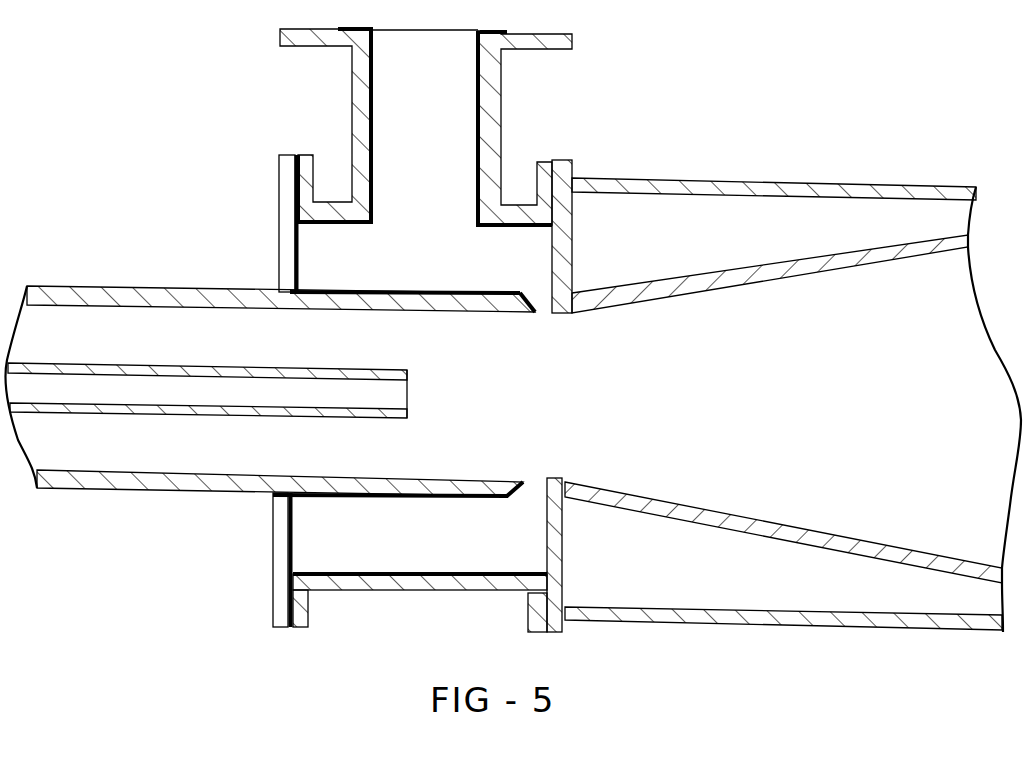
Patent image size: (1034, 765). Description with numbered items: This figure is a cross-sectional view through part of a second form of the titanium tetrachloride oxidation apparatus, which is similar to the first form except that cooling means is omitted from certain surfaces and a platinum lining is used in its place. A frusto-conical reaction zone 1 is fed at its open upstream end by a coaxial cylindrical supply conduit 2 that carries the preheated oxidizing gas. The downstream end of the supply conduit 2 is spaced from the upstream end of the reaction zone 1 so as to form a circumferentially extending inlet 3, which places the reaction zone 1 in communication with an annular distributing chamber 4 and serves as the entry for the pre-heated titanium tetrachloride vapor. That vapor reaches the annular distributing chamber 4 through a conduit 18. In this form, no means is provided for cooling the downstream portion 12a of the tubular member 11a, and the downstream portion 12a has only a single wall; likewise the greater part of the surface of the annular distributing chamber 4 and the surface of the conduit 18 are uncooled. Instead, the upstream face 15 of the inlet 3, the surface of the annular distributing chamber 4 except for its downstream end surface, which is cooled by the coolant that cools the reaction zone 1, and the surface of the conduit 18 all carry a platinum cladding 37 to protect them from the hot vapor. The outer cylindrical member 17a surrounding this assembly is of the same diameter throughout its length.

The reaction zone 1 is at (851, 334).
The supply conduit 2 is at (464, 408).
The inlet 3 is at (543, 312).
The annular distributing chamber 4 is at (432, 253).
The tubular member 11a is at (383, 314).
The downstream portion 12a is at (421, 476).
The upstream face 15 is at (528, 291).
The cylindrical member 17a is at (410, 562).
The conduit 18 is at (371, 108).
The platinum cladding 37 is at (298, 266).